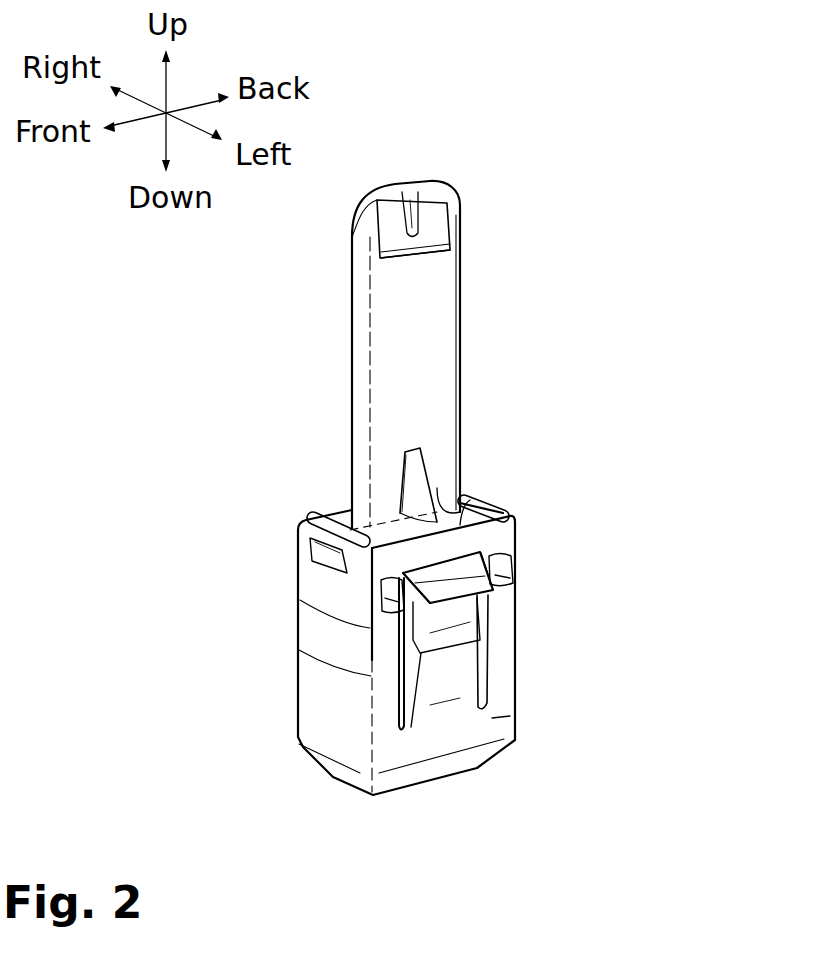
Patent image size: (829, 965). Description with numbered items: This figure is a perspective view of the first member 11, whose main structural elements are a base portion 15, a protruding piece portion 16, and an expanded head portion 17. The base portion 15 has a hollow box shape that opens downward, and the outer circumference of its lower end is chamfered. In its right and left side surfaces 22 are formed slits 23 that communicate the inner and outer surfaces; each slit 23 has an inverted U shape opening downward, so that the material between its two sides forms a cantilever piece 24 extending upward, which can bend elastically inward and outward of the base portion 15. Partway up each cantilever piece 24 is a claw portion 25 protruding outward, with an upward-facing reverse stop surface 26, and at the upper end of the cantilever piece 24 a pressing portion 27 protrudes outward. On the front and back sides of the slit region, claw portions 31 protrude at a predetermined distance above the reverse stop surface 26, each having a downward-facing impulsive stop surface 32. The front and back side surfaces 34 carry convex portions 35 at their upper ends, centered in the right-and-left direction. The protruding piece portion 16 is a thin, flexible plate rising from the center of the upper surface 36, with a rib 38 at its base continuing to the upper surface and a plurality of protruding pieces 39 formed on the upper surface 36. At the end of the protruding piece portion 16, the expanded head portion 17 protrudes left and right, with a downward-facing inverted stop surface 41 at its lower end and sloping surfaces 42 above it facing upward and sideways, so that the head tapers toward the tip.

The first member 11 is at (424, 493).
The base portion 15 is at (300, 664).
The protruding piece portion 16 is at (438, 336).
The expanded head portion 17 is at (446, 207).
The side surface 22 is at (498, 720).
The slit 23 is at (496, 700).
The cantilever piece 24 is at (519, 592).
The claw portion 25 is at (462, 665).
The reverse stop surface 26 is at (470, 632).
The pressing portion 27 is at (494, 603).
The claw portion 31 is at (370, 602).
The impulsive stop surface 32 is at (372, 635).
The front and back side surface 34 is at (305, 712).
The convex portion 35 is at (297, 537).
The upper surface 36 is at (466, 520).
The rib 38 is at (422, 455).
The protruding piece 39 is at (343, 525).
The inverted stop surface 41 is at (436, 250).
The sloping surface 42 is at (451, 201).